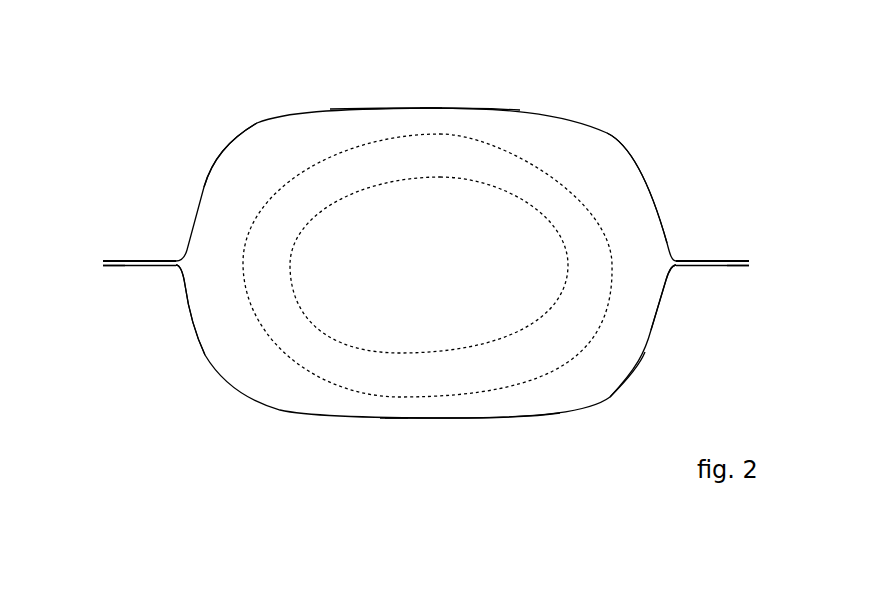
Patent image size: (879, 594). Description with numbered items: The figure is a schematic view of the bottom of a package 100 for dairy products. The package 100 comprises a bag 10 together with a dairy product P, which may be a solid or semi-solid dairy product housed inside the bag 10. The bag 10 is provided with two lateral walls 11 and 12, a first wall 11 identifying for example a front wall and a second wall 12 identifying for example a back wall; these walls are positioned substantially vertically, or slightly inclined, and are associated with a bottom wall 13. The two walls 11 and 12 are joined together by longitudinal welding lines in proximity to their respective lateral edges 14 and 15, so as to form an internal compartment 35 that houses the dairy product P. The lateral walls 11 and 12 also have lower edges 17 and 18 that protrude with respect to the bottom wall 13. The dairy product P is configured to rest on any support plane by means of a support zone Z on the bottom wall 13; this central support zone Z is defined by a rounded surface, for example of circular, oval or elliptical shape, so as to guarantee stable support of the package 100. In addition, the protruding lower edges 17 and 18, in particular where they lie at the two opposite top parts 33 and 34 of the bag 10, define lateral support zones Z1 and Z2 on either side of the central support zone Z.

The package 100 is at (656, 86).
The bag 10 is at (221, 93).
The first wall 11 is at (375, 104).
The second wall 12 is at (481, 422).
The bottom wall 13 is at (621, 196).
The lateral edge 14 is at (140, 259).
The lateral edge 15 is at (127, 268).
The lower edge 17 is at (431, 107).
The lower edge 18 is at (397, 421).
The top part 33 is at (159, 287).
The top part 34 is at (692, 287).
The internal compartment 35 is at (213, 219).
The dairy product P is at (499, 143).
The support zone Z is at (341, 343).
The lateral support zone Z1 is at (105, 250).
The lateral support zone Z2 is at (747, 250).